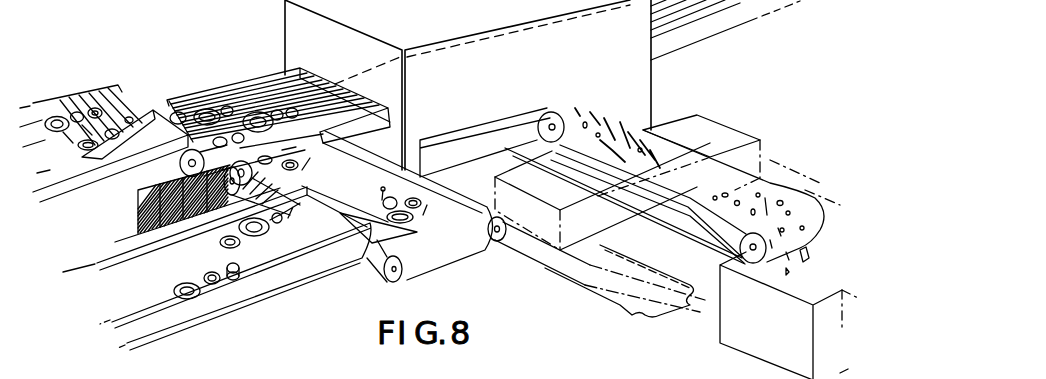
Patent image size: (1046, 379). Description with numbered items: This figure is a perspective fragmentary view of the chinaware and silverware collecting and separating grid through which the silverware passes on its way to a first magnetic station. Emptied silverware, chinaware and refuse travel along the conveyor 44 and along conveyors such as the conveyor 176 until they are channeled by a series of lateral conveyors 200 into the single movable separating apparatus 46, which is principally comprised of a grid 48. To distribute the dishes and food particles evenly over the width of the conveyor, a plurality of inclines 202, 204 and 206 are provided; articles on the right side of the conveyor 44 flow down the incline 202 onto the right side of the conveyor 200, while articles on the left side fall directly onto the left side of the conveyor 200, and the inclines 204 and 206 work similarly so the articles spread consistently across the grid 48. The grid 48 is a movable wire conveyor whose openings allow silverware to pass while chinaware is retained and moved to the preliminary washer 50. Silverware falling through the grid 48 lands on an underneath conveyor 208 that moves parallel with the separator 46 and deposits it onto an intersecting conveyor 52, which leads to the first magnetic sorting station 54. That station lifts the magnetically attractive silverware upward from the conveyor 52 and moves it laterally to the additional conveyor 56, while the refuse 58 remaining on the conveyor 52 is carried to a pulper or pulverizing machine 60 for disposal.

The conveyor 44 is at (273, 252).
The separating apparatus 46 is at (270, 84).
The grid 48 is at (258, 97).
The preliminary washer 50 is at (667, 230).
The intersecting conveyor 52 is at (608, 124).
The first magnetic sorting station 54 is at (727, 117).
The additional conveyor 56 is at (617, 267).
The refuse 58 is at (687, 202).
The pulper or pulverizing machine 60 is at (763, 345).
The conveyor 176 is at (108, 103).
The lateral conveyor 200 is at (462, 247).
The incline 202 is at (373, 266).
The incline 204 is at (287, 145).
The incline 206 is at (166, 113).
The underneath conveyor 208 is at (140, 238).